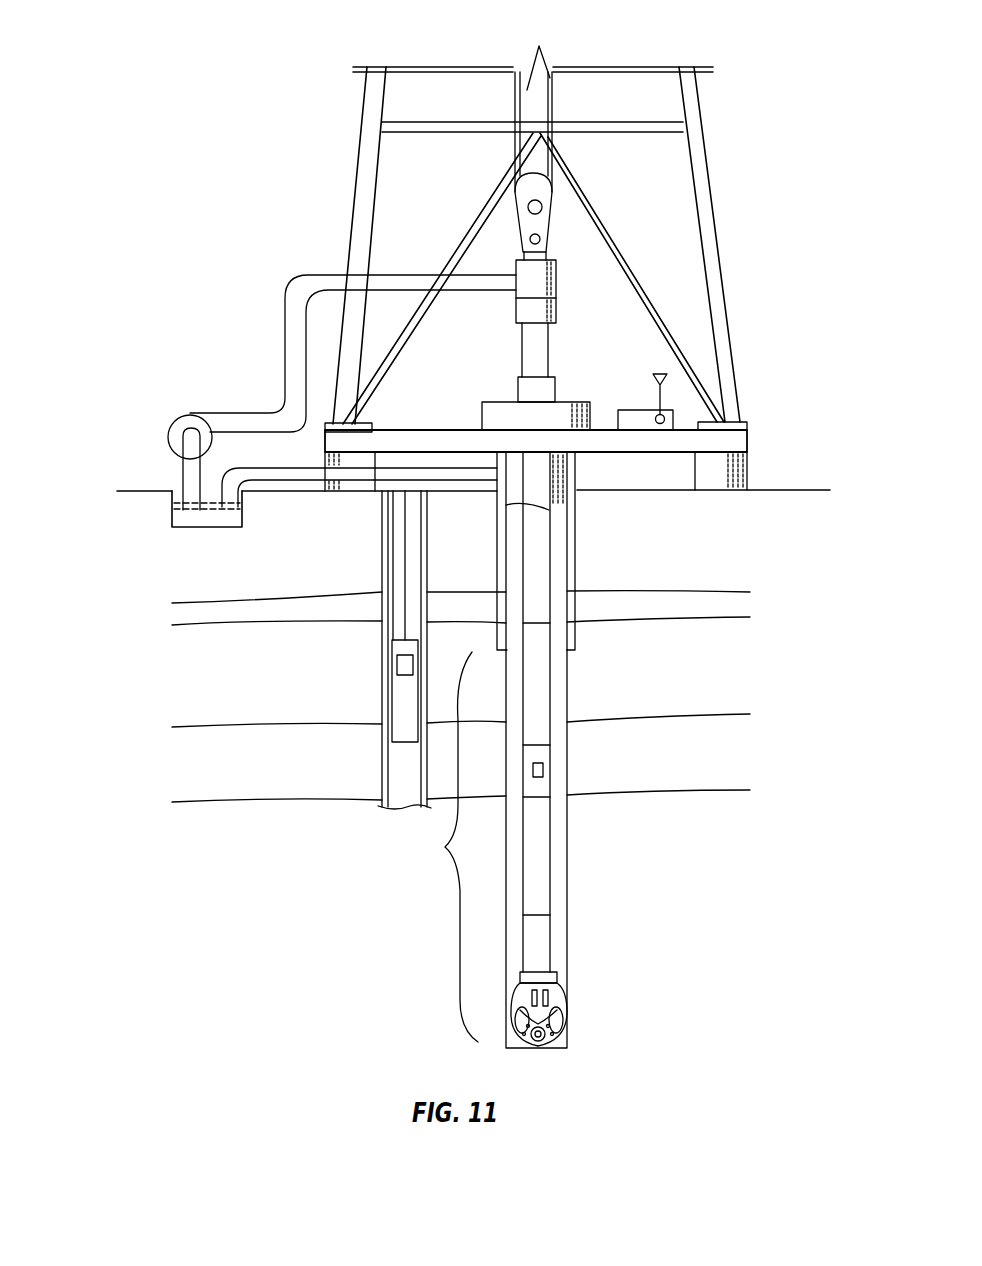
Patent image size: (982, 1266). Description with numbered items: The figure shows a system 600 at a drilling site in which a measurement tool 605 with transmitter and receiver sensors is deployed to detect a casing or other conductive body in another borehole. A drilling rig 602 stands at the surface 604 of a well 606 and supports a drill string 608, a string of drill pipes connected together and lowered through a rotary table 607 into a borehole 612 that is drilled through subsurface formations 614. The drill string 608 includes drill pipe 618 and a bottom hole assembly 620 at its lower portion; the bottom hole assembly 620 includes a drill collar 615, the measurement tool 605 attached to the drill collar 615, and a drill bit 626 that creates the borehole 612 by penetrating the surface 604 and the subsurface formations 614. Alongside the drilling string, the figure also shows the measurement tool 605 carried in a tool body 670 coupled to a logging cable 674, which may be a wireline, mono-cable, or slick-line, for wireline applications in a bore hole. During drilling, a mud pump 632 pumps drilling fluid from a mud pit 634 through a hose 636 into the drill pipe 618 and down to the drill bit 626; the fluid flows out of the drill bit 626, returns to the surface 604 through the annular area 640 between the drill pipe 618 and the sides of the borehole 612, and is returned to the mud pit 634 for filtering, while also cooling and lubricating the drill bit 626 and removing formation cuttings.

The system 600 is at (250, 40).
The drilling rig 602 is at (717, 207).
The surface 604 is at (770, 490).
The measurement tool 605 is at (398, 665).
The well 606 is at (592, 485).
The rotary table 607 is at (512, 402).
The drill string 608 is at (556, 545).
The borehole 612 is at (385, 590).
The subsurface formations 614 is at (158, 563).
The drill collar 615 is at (540, 755).
The drill pipe 618 is at (552, 677).
The bottom hole assembly 620 is at (433, 847).
The drill bit 626 is at (562, 1005).
The mud pump 632 is at (190, 415).
The mud pit 634 is at (178, 505).
The hose 636 is at (284, 331).
The annular area 640 is at (558, 707).
The tool body 670 is at (393, 692).
The logging cable 674 is at (402, 570).